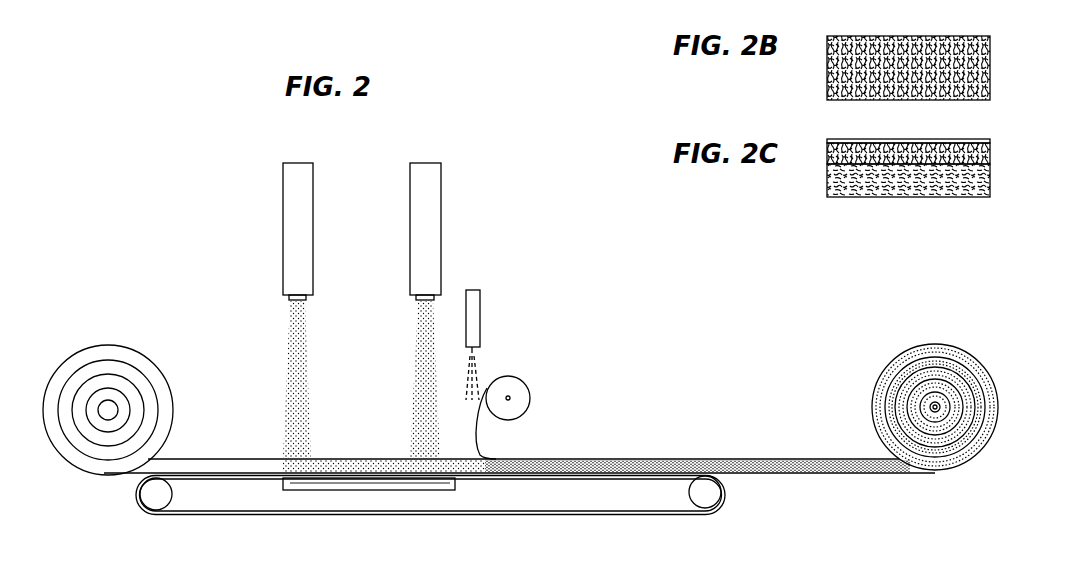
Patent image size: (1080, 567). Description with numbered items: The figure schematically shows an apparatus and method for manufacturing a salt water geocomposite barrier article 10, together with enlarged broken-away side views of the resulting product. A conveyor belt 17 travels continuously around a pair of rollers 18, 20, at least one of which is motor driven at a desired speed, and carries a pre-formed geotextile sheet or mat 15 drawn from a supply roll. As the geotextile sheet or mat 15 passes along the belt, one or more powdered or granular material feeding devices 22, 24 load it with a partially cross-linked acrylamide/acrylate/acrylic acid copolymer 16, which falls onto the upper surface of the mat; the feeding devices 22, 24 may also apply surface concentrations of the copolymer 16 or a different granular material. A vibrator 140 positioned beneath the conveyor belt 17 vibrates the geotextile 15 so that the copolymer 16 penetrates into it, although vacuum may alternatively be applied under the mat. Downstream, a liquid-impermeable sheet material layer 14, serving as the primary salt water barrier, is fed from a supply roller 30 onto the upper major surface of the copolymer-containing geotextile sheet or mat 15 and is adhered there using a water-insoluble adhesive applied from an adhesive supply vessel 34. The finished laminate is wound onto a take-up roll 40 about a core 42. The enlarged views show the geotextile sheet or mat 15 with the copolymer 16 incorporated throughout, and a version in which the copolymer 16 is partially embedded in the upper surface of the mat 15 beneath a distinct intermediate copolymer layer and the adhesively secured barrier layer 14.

In FIG. 2, the salt water geocomposite barrier article 10 is at (889, 331).
In FIG. 2, the liquid-impermeable sheet material layer 14 is at (478, 438).
In FIG. 2C, the liquid-impermeable sheet material layer 14 is at (975, 139).
In FIG. 2, the geotextile sheet or mat 15 is at (202, 458).
In FIG. 2B, the geotextile sheet or mat 15 is at (1008, 51).
In FIG. 2C, the geotextile sheet or mat 15 is at (975, 190).
In FIG. 2, the partially cross-linked acrylamide/acrylate/acrylic acid copolymer 16 is at (289, 353).
In FIG. 2C, the partially cross-linked acrylamide/acrylate/acrylic acid copolymer 16 is at (988, 158).
In FIG. 2, the conveyor belt 17 is at (398, 515).
In FIG. 2, the roller 18 is at (155, 500).
In FIG. 2, the roller 20 is at (706, 494).
In FIG. 2, the powdered or granular material feeding device 22 is at (313, 189).
In FIG. 2, the powdered or granular material feeding device 24 is at (442, 189).
In FIG. 2, the film supply roller 30 is at (527, 381).
In FIG. 2, the adhesive supply vessel 34 is at (481, 305).
In FIG. 2, the take-up roll 40 is at (963, 349).
In FIG. 2, the roll core 42 is at (937, 418).
In FIG. 2, the vibrator 140 is at (302, 492).